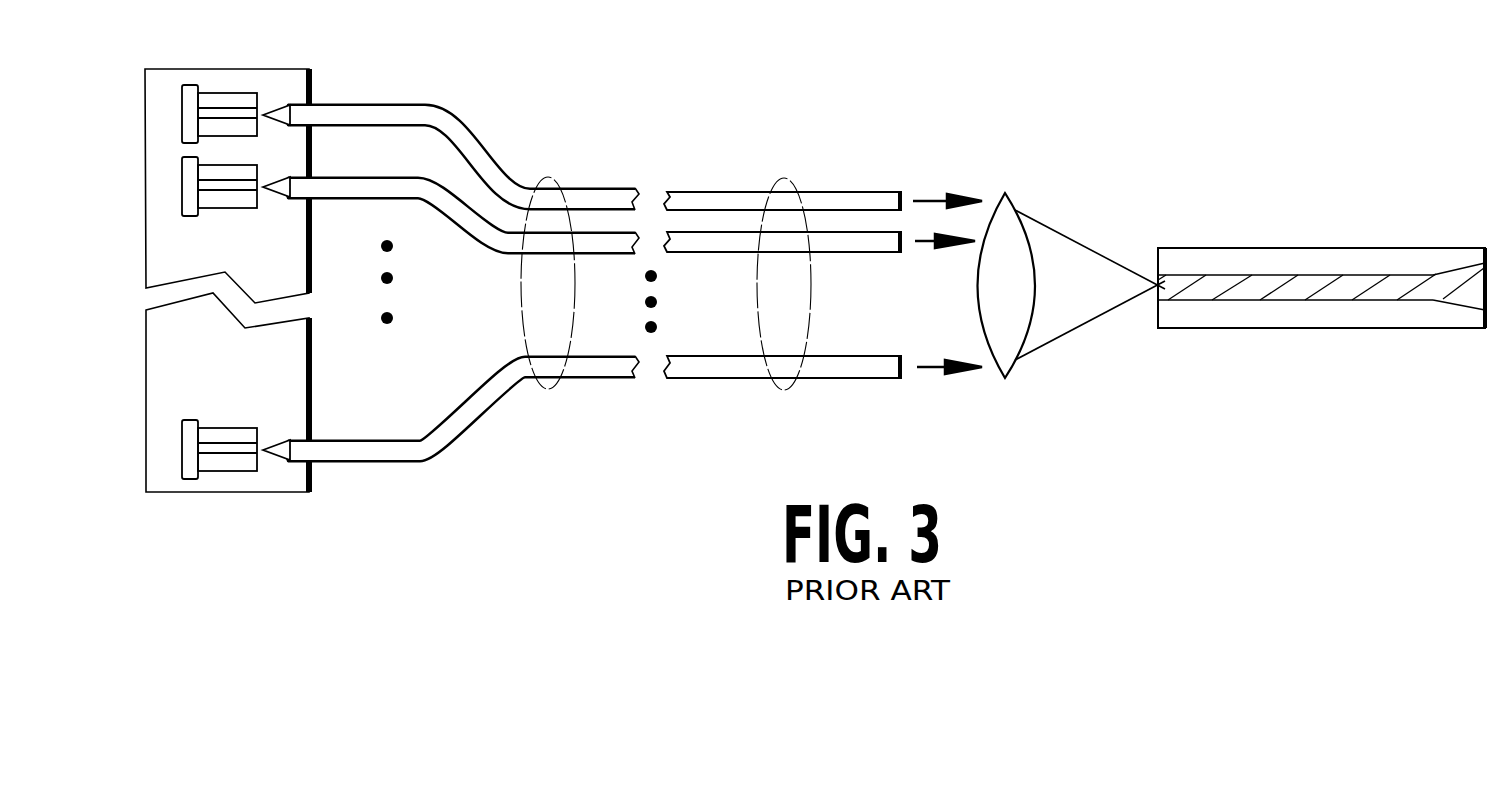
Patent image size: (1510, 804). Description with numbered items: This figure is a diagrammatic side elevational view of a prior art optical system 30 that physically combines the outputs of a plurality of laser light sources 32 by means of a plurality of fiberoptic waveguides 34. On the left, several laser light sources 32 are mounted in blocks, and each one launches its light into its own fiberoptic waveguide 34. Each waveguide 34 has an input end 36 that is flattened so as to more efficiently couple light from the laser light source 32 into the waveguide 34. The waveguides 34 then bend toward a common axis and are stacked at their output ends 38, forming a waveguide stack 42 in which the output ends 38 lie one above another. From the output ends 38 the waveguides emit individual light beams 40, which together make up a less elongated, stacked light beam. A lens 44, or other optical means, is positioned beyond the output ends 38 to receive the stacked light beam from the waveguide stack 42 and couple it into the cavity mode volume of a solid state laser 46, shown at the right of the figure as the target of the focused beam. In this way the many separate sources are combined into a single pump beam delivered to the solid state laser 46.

The optical system 30 is at (738, 78).
The laser light source 32 is at (227, 470).
The fiberoptic waveguide 34 is at (453, 452).
The input end 36 is at (271, 442).
The output end 38 is at (901, 375).
The individual light beam 40 is at (932, 362).
The waveguide stack 42 is at (774, 393).
The lens 44 is at (1010, 377).
The solid state laser 46 is at (1255, 330).